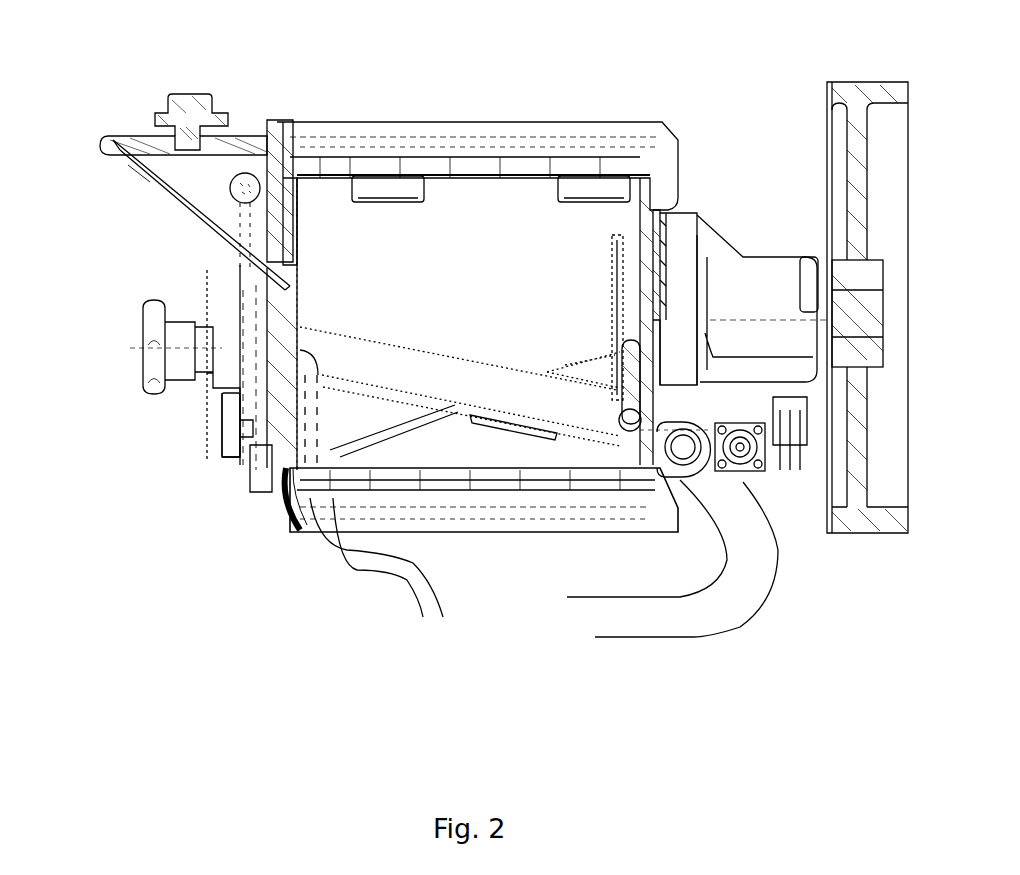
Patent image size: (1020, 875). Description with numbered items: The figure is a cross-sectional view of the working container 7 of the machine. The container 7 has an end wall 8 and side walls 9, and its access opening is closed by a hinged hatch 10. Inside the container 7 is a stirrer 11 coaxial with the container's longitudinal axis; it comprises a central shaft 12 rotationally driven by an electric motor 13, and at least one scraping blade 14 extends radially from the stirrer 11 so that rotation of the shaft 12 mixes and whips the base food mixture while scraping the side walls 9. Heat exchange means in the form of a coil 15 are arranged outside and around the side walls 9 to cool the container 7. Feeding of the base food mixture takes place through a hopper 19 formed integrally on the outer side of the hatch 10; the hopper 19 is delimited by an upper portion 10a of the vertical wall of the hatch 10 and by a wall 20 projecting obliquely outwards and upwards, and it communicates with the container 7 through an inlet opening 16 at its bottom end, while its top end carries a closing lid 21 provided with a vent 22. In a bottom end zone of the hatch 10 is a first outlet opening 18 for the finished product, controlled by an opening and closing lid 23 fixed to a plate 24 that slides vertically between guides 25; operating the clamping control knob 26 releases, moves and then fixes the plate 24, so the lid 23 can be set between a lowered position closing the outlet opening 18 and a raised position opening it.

The container 7 is at (503, 333).
The end wall 8 is at (665, 200).
The side walls 9 is at (520, 168).
The hatch 10 is at (283, 190).
The upper portion of the vertical wall of the hatch 10a is at (283, 213).
The stirrer 11 is at (600, 320).
The central shaft 12 is at (640, 327).
The electric motor 13 is at (770, 290).
The scraping blade 14 is at (567, 398).
The heat exchange means (coil) 15 is at (425, 170).
The inlet opening 16 is at (283, 262).
The first outlet opening 18 is at (280, 487).
The hopper 19 is at (140, 170).
The wall 20 is at (183, 212).
The closing lid 21 is at (113, 135).
The vent 22 is at (185, 97).
The opening and closing lid 23 is at (260, 455).
The plate 24 is at (222, 417).
The guides 25 is at (207, 275).
The clamping control knob 26 is at (165, 345).